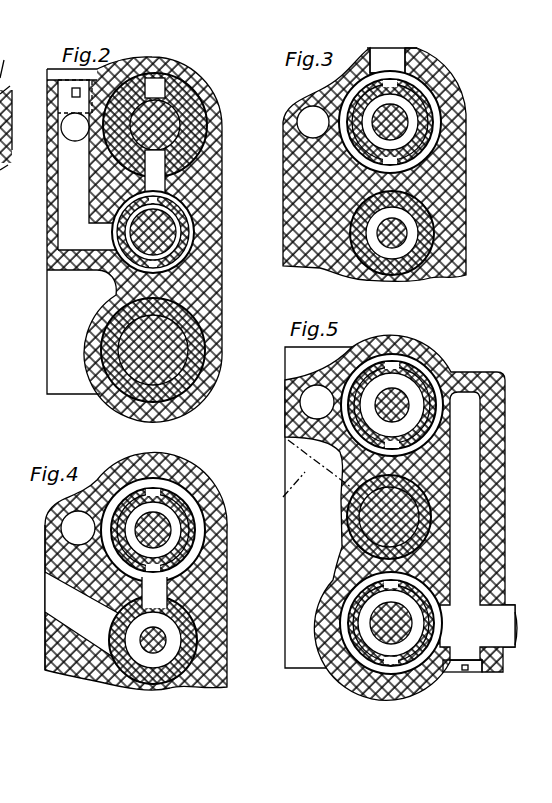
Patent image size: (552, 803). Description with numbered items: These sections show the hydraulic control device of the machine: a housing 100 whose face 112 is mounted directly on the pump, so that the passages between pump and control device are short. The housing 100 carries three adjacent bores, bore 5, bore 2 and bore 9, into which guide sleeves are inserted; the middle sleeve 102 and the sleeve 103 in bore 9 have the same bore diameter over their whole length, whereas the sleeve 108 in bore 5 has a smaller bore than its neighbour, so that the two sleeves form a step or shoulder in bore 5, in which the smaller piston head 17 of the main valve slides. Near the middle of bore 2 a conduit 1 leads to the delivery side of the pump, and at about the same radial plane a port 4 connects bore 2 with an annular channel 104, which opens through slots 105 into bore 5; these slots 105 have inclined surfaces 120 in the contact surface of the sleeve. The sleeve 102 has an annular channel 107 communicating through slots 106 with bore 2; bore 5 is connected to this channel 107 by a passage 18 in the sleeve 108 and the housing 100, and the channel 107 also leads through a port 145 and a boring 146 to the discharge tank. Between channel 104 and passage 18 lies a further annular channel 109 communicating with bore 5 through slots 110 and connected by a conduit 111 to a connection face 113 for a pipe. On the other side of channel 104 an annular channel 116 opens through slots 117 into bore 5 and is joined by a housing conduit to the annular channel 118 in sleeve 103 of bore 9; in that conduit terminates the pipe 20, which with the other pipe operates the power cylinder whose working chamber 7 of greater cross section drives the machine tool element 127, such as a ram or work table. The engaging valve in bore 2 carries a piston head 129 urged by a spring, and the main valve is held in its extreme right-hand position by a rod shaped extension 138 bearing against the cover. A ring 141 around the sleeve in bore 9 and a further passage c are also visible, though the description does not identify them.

In FIG. 5, the conduit 1 is at (292, 481).
In FIG. 3, the bore 2 is at (408, 239).
In FIG. 4, the bore 2 is at (172, 650).
In FIG. 4, the port 4 is at (165, 586).
In FIG. 3, the bore 5 is at (412, 125).
In FIG. 4, the bore 5 is at (175, 535).
In FIG. 5, the bore 5 is at (407, 418).
In FIG. 2, the working chamber 7 is at (8, 118).
In FIG. 5, the bore 9 is at (372, 592).
In FIG. 2, the piston head 17 is at (168, 135).
In FIG. 2, the passage 18 is at (158, 185).
In FIG. 2, the pipe 20 is at (11, 182).
In FIG. 5, the pipe 20 is at (503, 616).
In FIG. 2, the housing 100 is at (201, 105).
In FIG. 3, the housing 100 is at (451, 166).
In FIG. 4, the housing 100 is at (186, 477).
In FIG. 5, the housing 100 is at (400, 350).
In FIG. 4, the guide sleeve 102 is at (187, 617).
In FIG. 5, the guide sleeve 102 is at (356, 528).
In FIG. 2, the guide sleeve 103 is at (200, 344).
In FIG. 4, the annular channel 104 is at (165, 482).
In FIG. 4, the slots 105 is at (187, 503).
In FIG. 2, the slots 106 is at (177, 224).
In FIG. 2, the annular channel 107 is at (192, 263).
In FIG. 2, the guide sleeve 108 is at (172, 88).
In FIG. 3, the annular channel 109 is at (355, 141).
In FIG. 3, the slots 110 is at (360, 150).
In FIG. 3, the conduit 111 is at (392, 63).
In FIG. 2, the face 112 is at (46, 327).
In FIG. 4, the face 112 is at (47, 547).
In FIG. 5, the face 112 is at (285, 358).
In FIG. 3, the connection face 113 is at (408, 50).
In FIG. 5, the annular channel 116 is at (412, 364).
In FIG. 5, the slots 117 is at (430, 382).
In FIG. 5, the annular channel 118 is at (330, 680).
In FIG. 5, the inclined surfaces 120 is at (366, 640).
In FIG. 2, the machine tool element 127 is at (20, 65).
In FIG. 5, the piston head 129 is at (375, 510).
In FIG. 5, the rod shaped extension 138 is at (378, 400).
In FIG. 2, the bearing ring 141 is at (170, 327).
In FIG. 2, the port 145 is at (60, 204).
In FIG. 2, the boring 146 is at (66, 128).
In FIG. 3, the boring 146 is at (312, 120).
In FIG. 4, the boring 146 is at (72, 528).
In FIG. 5, the boring 146 is at (303, 402).
In FIG. 5, the channel c is at (469, 508).